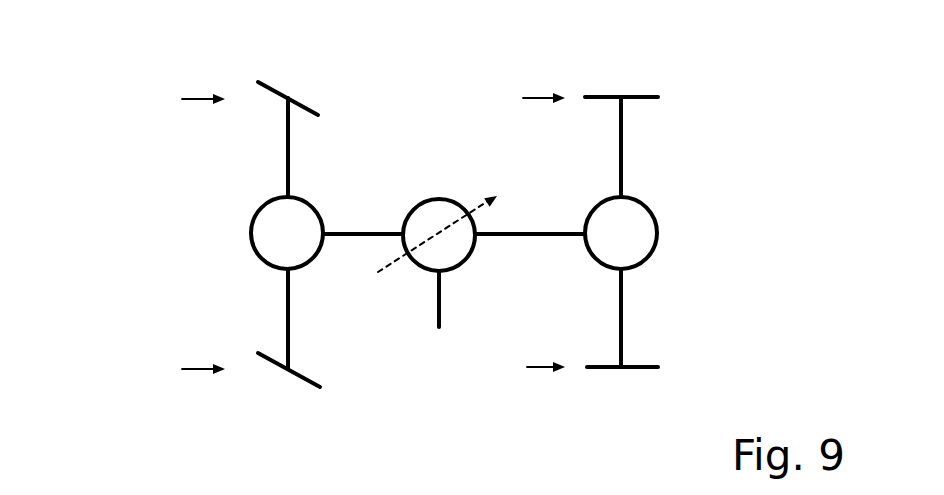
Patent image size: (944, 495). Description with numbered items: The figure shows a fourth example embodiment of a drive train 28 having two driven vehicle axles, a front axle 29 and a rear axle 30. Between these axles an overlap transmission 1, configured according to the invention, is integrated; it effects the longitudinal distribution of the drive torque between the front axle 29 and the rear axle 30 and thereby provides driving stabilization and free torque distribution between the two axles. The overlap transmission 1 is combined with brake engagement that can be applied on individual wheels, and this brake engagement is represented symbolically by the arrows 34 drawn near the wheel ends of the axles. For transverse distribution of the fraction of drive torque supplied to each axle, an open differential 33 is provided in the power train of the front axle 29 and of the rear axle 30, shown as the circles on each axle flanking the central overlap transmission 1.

The overlap transmission 1 is at (446, 196).
The drive train 28 is at (176, 189).
The front axle 29 is at (283, 155).
The rear axle 30 is at (648, 151).
The open differential 33 is at (245, 241).
The arrows 34 is at (202, 95).